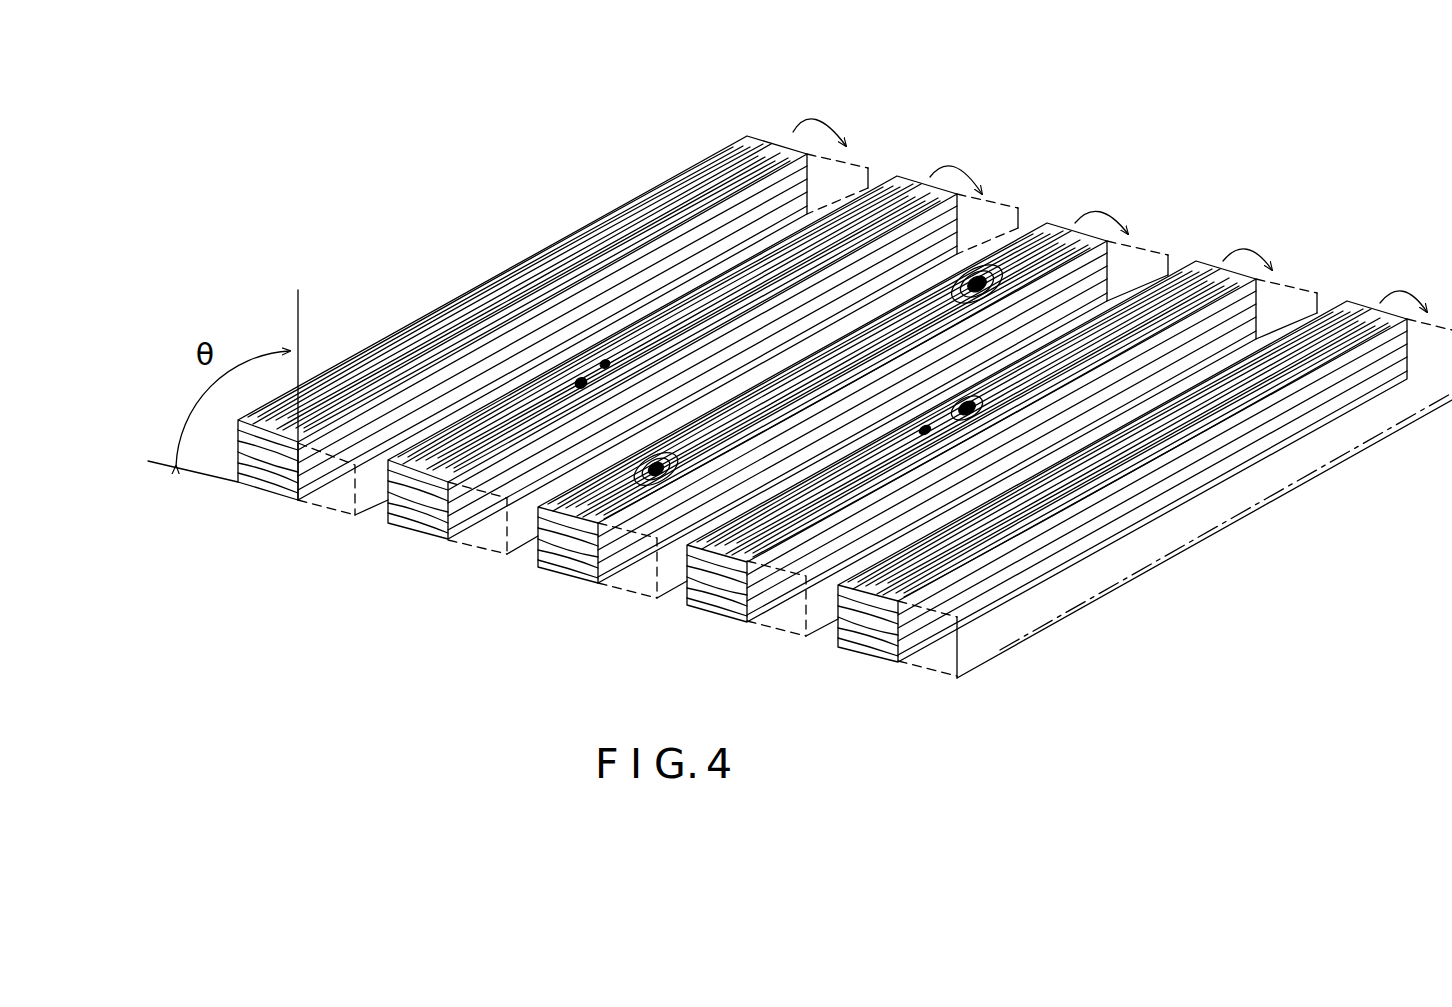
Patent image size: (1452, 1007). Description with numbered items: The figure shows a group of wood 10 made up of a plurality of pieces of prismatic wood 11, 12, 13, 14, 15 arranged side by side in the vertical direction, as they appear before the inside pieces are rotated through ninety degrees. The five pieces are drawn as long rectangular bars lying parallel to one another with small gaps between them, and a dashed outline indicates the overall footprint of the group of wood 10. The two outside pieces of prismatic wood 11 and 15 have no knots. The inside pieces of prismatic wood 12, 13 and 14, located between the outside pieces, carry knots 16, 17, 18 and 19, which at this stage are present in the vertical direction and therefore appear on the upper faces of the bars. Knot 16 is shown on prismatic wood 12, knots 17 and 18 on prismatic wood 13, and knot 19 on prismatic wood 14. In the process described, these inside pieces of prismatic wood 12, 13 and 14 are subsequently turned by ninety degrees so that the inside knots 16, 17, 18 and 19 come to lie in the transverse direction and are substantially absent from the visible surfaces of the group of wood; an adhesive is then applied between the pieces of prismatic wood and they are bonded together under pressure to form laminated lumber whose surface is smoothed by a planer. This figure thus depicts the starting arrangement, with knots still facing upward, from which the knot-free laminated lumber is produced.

The group of wood 10 is at (480, 128).
The prismatic wood 11 is at (763, 148).
The prismatic wood 12 is at (912, 203).
The prismatic wood 13 is at (1071, 228).
The prismatic wood 14 is at (1211, 290).
The prismatic wood 15 is at (1362, 327).
The knot 16 is at (577, 393).
The knot 17 is at (985, 278).
The knot 18 is at (654, 478).
The knot 19 is at (963, 412).